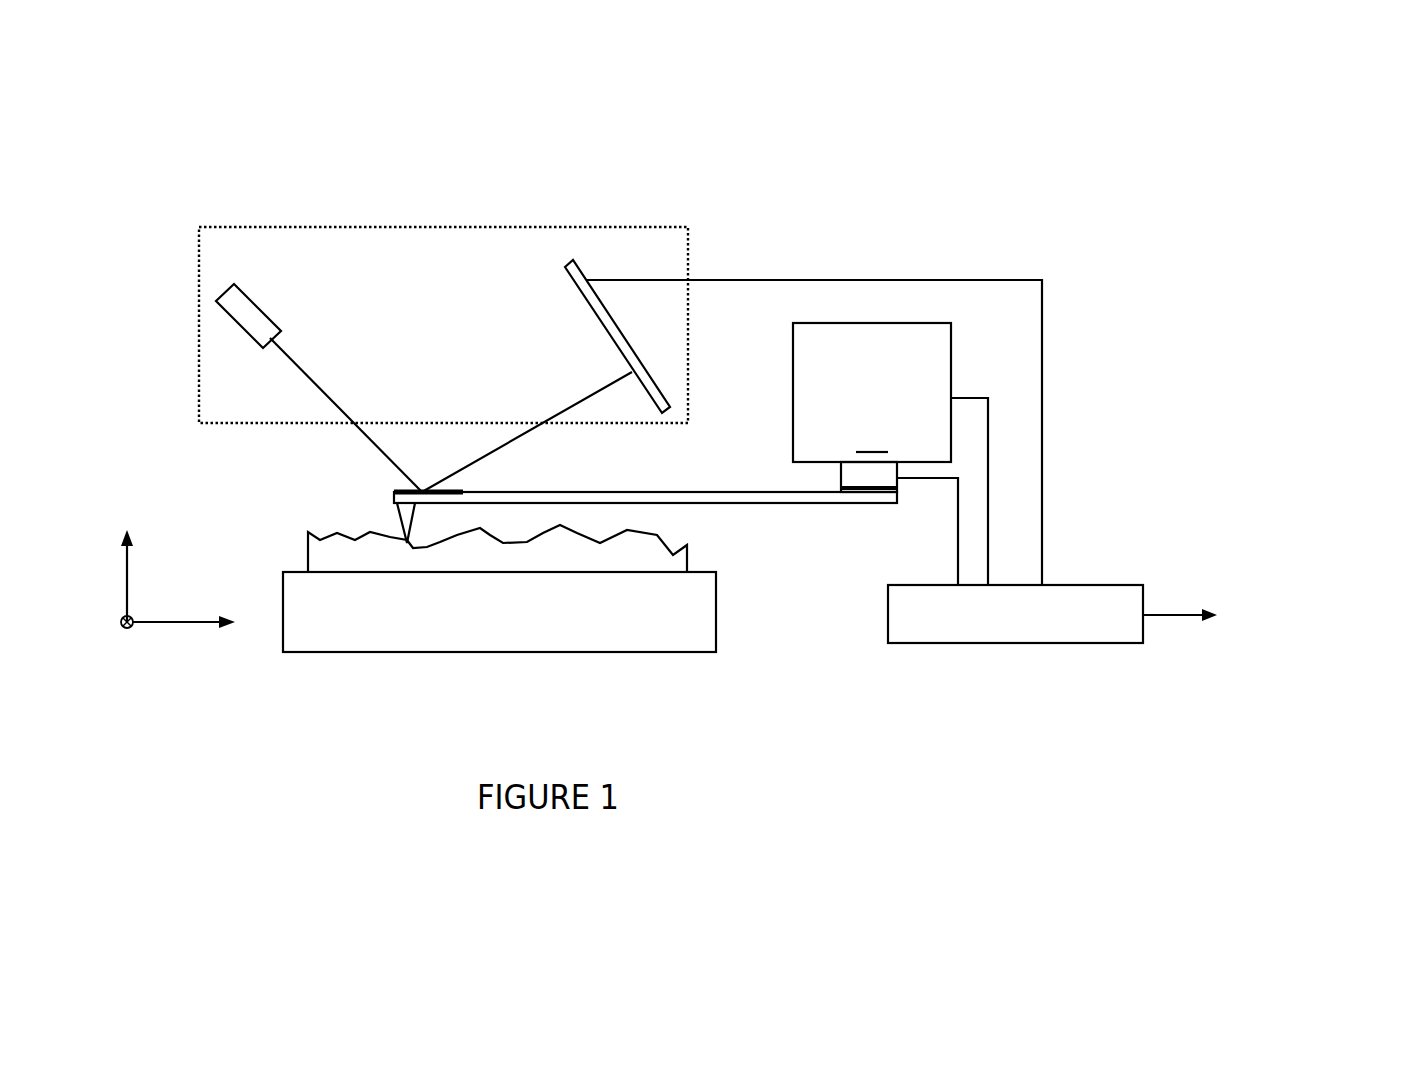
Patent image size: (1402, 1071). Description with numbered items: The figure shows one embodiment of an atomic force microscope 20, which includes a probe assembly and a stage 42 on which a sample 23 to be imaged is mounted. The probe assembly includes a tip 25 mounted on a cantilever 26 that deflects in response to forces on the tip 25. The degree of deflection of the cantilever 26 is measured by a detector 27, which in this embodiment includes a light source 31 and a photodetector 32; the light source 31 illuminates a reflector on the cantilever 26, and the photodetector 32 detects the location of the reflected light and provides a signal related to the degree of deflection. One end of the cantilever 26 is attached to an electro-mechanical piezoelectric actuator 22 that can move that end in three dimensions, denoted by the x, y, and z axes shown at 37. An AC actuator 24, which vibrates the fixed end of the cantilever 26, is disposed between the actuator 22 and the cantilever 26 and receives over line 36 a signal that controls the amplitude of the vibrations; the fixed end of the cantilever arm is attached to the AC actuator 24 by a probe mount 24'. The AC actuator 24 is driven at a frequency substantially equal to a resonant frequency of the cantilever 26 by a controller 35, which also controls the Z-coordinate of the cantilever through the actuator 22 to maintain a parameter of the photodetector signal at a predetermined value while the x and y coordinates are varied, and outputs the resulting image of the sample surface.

The microscope 20 is at (118, 177).
The piezoelectric actuator 22 is at (890, 454).
The sample 23 is at (305, 548).
The AC actuator 24 is at (844, 491).
The probe mount 24' is at (863, 523).
The tip 25 is at (406, 525).
The cantilever 26 is at (704, 498).
The detector 27 is at (198, 341).
The light source 31 is at (250, 310).
The photodetector 32 is at (608, 322).
The controller 35 is at (1080, 643).
The line 36 is at (958, 527).
The x, y, and z dimensions 37 is at (167, 618).
The stage 42 is at (347, 642).